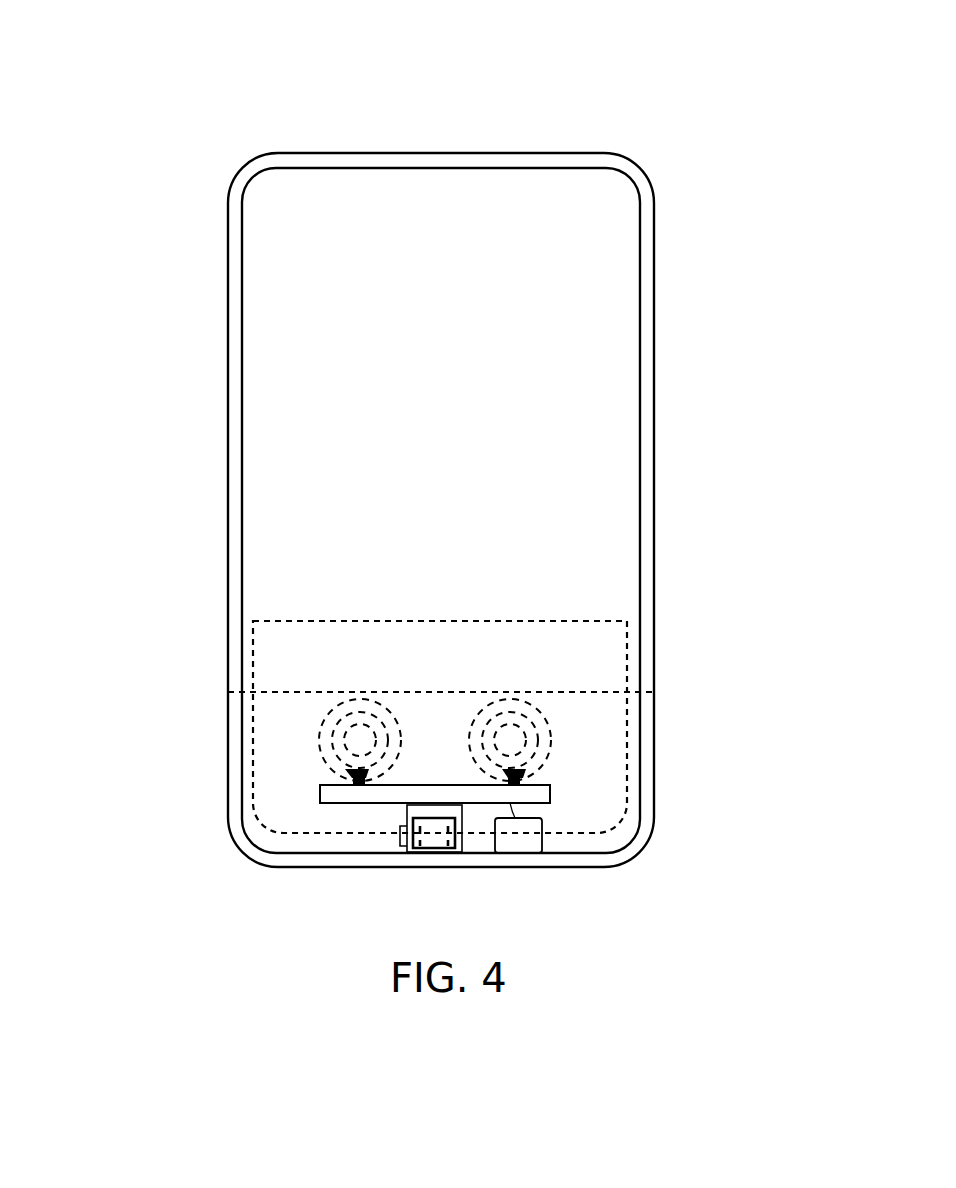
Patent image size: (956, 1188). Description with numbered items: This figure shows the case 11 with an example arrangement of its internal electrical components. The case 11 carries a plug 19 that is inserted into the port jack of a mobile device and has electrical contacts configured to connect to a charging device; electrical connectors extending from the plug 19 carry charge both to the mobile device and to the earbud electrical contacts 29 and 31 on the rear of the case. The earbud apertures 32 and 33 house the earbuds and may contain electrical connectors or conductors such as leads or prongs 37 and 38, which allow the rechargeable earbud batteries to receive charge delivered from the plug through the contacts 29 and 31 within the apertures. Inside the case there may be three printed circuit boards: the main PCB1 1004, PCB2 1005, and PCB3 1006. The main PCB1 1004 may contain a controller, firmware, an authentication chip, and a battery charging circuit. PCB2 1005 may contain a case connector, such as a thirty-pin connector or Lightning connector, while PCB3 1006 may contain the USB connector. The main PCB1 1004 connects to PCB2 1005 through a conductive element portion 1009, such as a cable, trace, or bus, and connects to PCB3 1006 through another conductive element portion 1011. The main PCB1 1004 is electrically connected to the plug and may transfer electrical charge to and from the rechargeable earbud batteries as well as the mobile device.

The case 11 is at (451, 135).
The plug 19 is at (413, 838).
The earbud electrical contact 29 is at (350, 776).
The earbud electrical contact 31 is at (522, 768).
The earbud aperture 32 is at (318, 722).
The earbud aperture 33 is at (553, 722).
The prong 37 is at (347, 781).
The prong 38 is at (527, 779).
The main PCB1 1004 is at (322, 806).
The PCB2 1005 is at (412, 853).
The PCB3 1006 is at (522, 853).
The conductive element portion 1009 is at (408, 812).
The conductive element portion 1011 is at (525, 805).